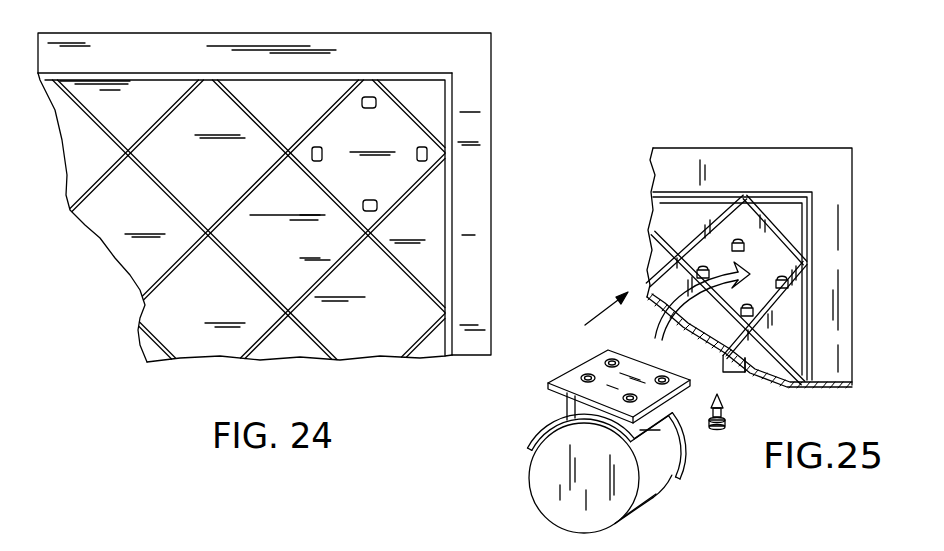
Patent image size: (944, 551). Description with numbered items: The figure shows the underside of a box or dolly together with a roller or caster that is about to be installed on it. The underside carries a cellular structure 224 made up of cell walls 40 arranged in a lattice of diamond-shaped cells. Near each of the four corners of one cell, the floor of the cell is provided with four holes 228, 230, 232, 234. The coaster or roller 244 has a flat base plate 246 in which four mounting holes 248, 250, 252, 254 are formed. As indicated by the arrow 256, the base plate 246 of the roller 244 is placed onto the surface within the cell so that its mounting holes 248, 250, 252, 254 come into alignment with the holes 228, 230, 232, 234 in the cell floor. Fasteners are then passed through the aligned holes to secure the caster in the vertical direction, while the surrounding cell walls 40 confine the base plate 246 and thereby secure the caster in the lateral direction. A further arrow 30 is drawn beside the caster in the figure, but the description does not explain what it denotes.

In FIG. 24, the cellular structure 224 is at (403, 140).
In FIG. 24, the hole 228 is at (376, 100).
In FIG. 25, the hole 228 is at (742, 240).
In FIG. 24, the hole 230 is at (428, 155).
In FIG. 25, the hole 230 is at (790, 280).
In FIG. 24, the hole 232 is at (377, 205).
In FIG. 25, the hole 232 is at (756, 313).
In FIG. 24, the hole 234 is at (317, 147).
In FIG. 25, the hole 234 is at (700, 270).
In FIG. 25, the cell walls 40 is at (708, 208).
In FIG. 25, the arrow 256 is at (655, 325).
In FIG. 25, the direction arrow 30 is at (593, 358).
In FIG. 25, the base plate 246 is at (602, 432).
In FIG. 25, the mounting hole 248 is at (600, 318).
In FIG. 25, the mounting hole 250 is at (664, 379).
In FIG. 25, the mounting hole 254 is at (582, 376).
In FIG. 25, the mounting hole 252 is at (685, 470).
In FIG. 25, the coaster or roller 244 is at (555, 487).